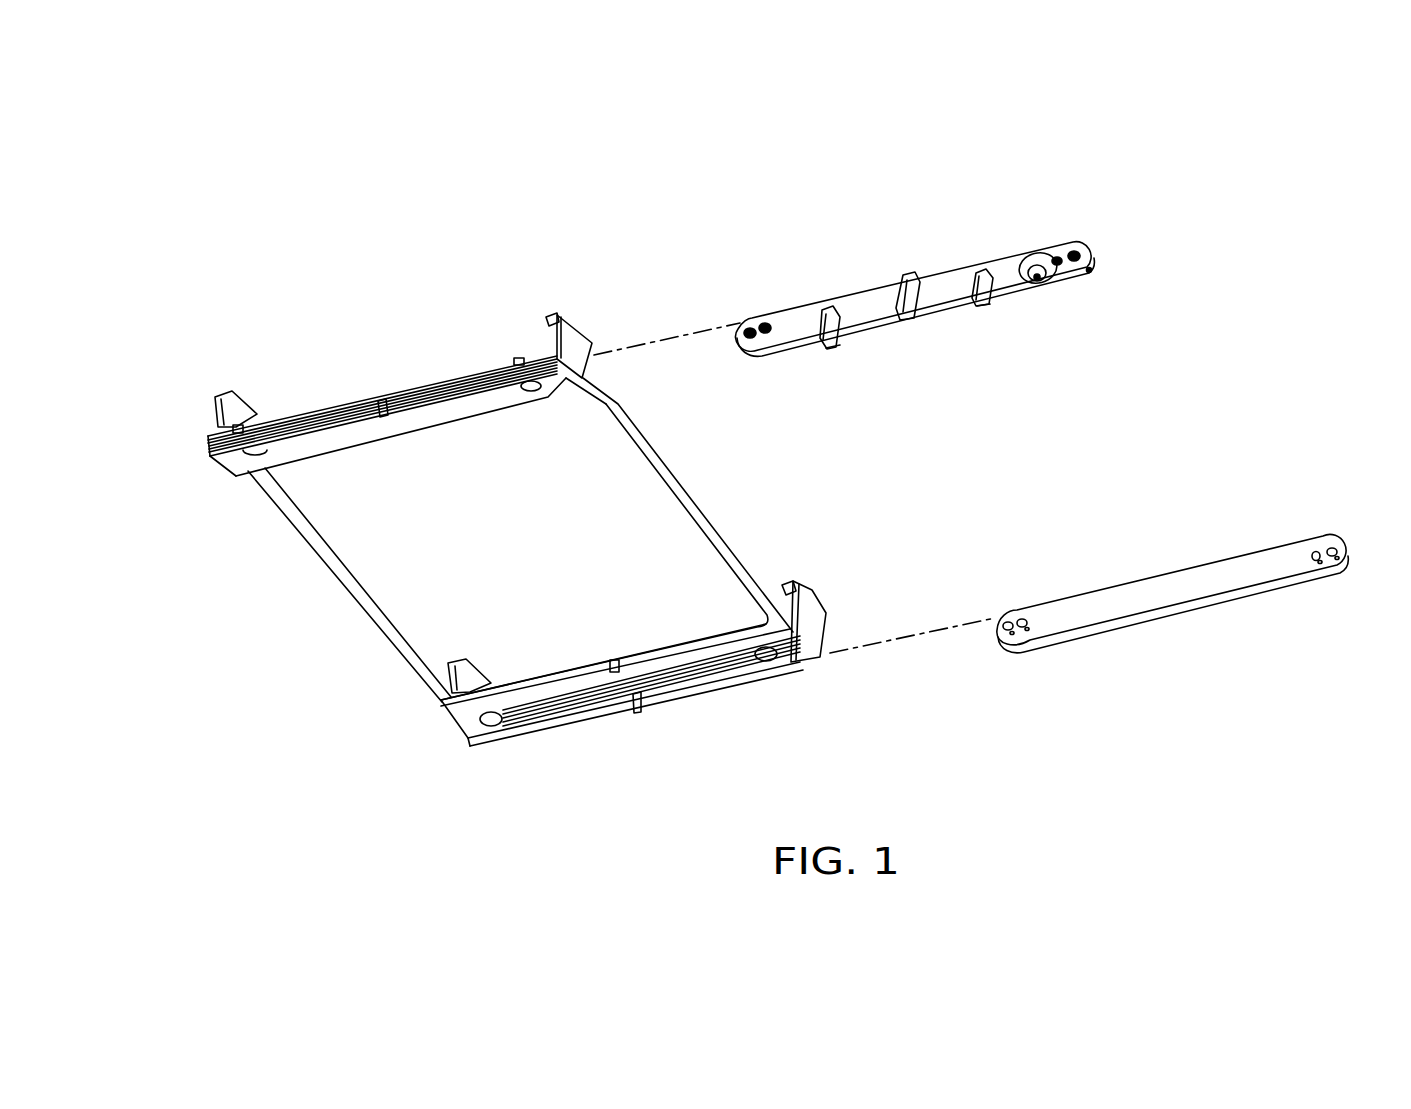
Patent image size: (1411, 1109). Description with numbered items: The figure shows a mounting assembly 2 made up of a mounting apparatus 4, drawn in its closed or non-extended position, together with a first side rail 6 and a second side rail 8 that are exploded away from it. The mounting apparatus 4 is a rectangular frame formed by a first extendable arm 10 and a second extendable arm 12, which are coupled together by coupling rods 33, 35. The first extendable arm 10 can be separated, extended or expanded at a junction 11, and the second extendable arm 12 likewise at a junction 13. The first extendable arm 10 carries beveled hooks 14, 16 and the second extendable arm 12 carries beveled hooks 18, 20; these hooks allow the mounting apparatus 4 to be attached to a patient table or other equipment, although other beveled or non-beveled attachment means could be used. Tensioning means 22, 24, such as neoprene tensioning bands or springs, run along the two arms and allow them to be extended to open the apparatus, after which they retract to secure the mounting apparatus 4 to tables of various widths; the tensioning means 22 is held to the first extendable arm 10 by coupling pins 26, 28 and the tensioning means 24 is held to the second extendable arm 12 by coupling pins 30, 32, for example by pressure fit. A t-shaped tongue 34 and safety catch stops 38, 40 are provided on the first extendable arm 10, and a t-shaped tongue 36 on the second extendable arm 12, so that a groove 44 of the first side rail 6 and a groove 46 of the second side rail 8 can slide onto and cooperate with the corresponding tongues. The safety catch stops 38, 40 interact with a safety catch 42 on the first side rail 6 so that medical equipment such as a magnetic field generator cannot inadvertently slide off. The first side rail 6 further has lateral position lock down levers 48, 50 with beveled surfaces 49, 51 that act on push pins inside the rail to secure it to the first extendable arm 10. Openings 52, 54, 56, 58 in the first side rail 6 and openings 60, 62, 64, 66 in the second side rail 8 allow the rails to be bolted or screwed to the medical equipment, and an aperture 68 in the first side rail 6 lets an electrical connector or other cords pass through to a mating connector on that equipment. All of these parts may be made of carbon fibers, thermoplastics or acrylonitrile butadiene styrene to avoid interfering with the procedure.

The mounting assembly 2 is at (640, 220).
The mounting apparatus 4 is at (304, 330).
The first side rail 6 is at (1120, 250).
The second side rail 8 is at (1306, 614).
The first extendable arm 10 is at (234, 478).
The second extendable arm 12 is at (452, 732).
The junction 11 is at (384, 392).
The junction 13 is at (638, 720).
The beveled hook 14 is at (219, 398).
The beveled hook 16 is at (556, 318).
The beveled hook 18 is at (458, 662).
The beveled hook 20 is at (791, 582).
The tensioning means 22 is at (436, 413).
The tensioning means 24 is at (548, 714).
The coupling pin 26 is at (258, 453).
The coupling pin 28 is at (531, 392).
The coupling pin 30 is at (492, 726).
The coupling pin 32 is at (766, 661).
The coupling rod 33 is at (352, 577).
The t-shaped tongue 34 is at (560, 380).
The coupling rod 35 is at (682, 482).
The t-shaped tongue 36 is at (806, 664).
The safety catch stop 38 is at (518, 358).
The safety catch stop 40 is at (241, 427).
The safety catch 42 is at (911, 277).
The groove 44 is at (876, 288).
The groove 46 is at (1094, 588).
The lateral position lock down lever 48 is at (836, 352).
The beveled surface 49 is at (826, 307).
The lateral position lock down lever 50 is at (996, 315).
The beveled surface 51 is at (978, 271).
The opening 52 is at (750, 323).
The opening 54 is at (762, 322).
The opening 56 is at (1058, 256).
The opening 58 is at (1079, 251).
The opening 60 is at (1008, 620).
The opening 62 is at (1021, 617).
The opening 64 is at (1315, 550).
The opening 66 is at (1337, 549).
The aperture 68 is at (1040, 281).